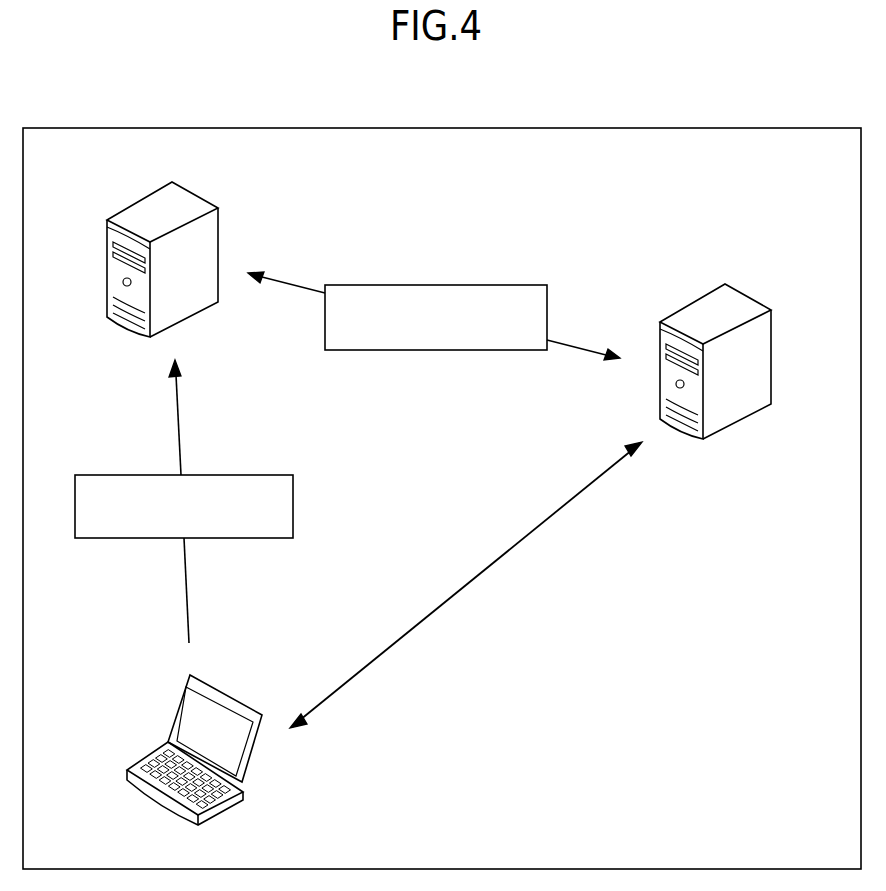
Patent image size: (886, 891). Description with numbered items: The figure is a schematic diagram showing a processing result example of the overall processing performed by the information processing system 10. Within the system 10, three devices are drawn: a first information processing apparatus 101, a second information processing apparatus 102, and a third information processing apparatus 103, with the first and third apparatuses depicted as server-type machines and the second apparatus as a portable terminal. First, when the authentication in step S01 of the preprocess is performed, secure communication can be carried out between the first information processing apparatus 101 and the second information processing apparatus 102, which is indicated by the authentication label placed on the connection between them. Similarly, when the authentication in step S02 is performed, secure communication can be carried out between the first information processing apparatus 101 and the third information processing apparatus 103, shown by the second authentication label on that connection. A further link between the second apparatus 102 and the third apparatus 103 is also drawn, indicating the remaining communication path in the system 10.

The information processing system 10 is at (64, 161).
The first information processing apparatus 101 is at (197, 195).
The second information processing apparatus 102 is at (227, 693).
The third information processing apparatus 103 is at (747, 297).
The authentication step S01 is at (203, 470).
The authentication step S02 is at (445, 283).